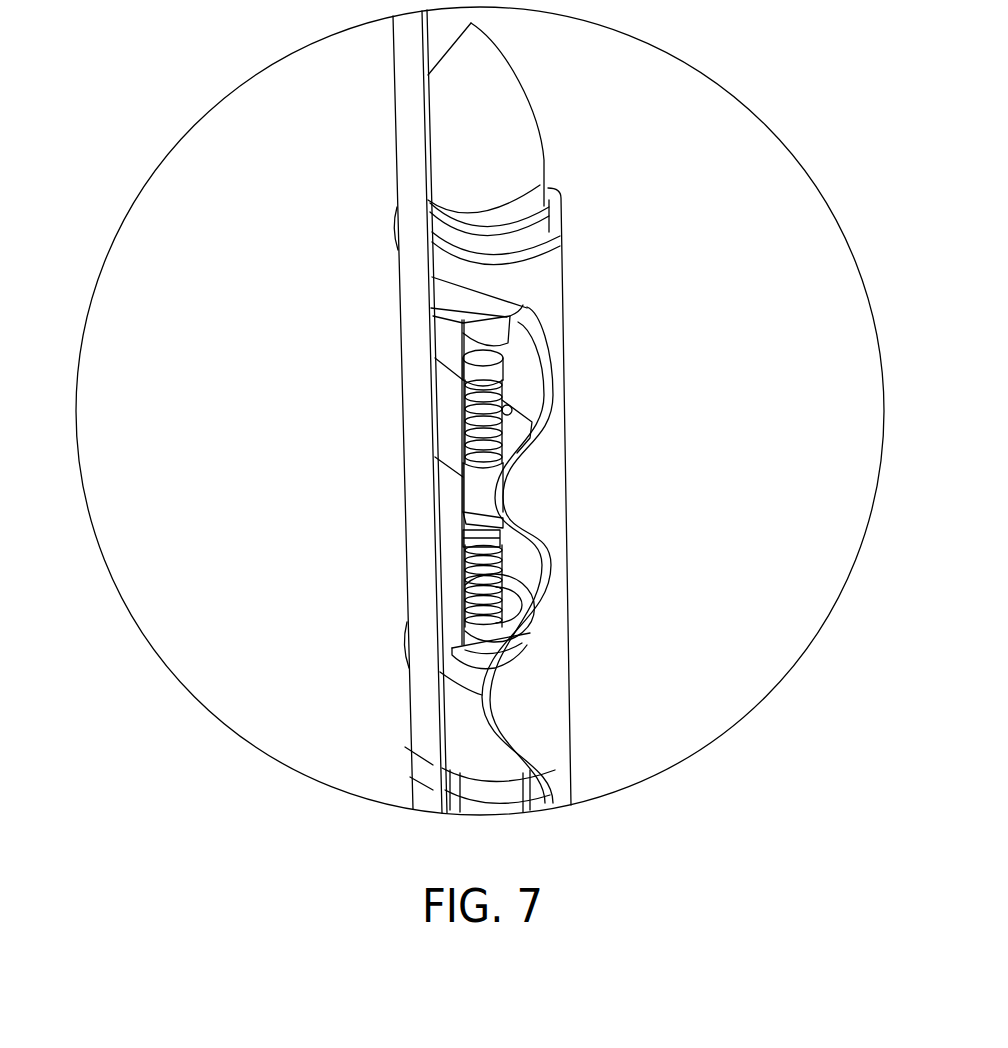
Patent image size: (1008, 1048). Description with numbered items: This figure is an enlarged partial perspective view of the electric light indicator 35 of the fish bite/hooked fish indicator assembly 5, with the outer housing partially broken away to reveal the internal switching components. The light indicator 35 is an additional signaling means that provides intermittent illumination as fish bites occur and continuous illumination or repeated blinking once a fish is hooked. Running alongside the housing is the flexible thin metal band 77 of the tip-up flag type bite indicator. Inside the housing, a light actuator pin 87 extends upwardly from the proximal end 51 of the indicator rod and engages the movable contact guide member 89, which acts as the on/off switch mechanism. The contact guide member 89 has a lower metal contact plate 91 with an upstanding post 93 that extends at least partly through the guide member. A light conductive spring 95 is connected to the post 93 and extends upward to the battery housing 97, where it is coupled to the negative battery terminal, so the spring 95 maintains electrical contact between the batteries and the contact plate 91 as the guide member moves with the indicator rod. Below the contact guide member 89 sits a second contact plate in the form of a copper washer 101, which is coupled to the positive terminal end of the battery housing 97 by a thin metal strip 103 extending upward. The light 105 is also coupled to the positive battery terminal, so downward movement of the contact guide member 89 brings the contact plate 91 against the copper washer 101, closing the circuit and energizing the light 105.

The fish bite/hooked fish indicator assembly 5 is at (90, 205).
The electric light indicator 35 is at (605, 323).
The proximal end 51 is at (485, 660).
The band 77 is at (405, 143).
The light actuator pin 87 is at (502, 575).
The contact guide member 89 is at (525, 418).
The contact plate 91 is at (503, 528).
The post 93 is at (482, 477).
The spring 95 is at (505, 400).
The battery housing 97 is at (502, 332).
The copper washer 101 is at (453, 645).
The metal strip 103 is at (447, 357).
The light 105 is at (487, 118).